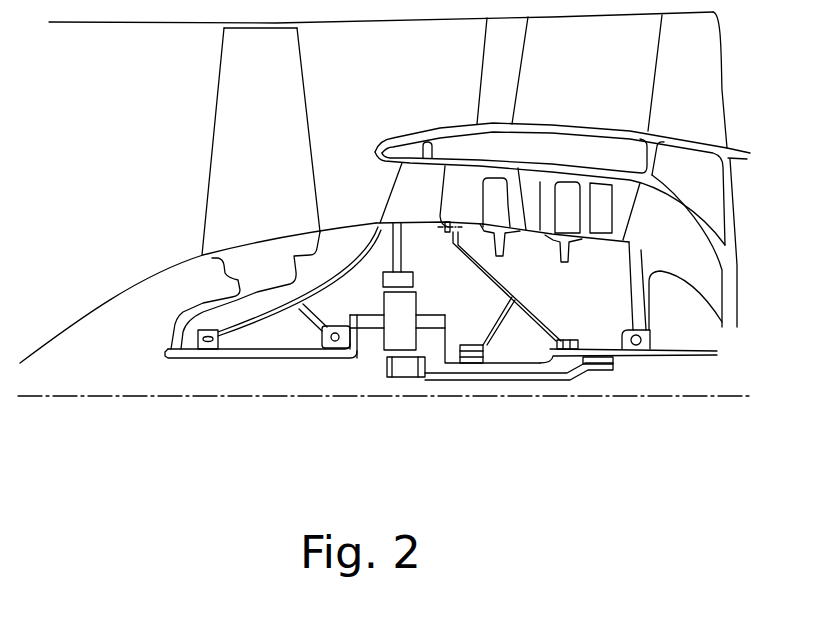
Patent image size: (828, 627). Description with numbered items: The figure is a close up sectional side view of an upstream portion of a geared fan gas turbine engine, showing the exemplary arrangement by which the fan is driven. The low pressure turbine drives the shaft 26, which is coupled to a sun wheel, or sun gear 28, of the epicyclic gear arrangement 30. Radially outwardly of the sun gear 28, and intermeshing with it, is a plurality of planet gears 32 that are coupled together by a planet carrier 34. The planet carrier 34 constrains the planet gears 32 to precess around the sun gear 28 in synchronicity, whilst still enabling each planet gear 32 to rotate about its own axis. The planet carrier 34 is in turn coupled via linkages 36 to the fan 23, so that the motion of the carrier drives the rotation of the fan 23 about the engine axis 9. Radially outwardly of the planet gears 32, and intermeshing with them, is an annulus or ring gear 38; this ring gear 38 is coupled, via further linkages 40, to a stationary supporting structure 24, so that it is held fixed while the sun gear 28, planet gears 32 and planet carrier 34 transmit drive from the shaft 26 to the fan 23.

The engine axis 9 is at (191, 400).
The fan 23 is at (226, 145).
The stationary supporting structure 24 is at (408, 190).
The shaft 26 is at (540, 380).
The sun gear 28 is at (405, 377).
The epicyclic gear arrangement 30 is at (358, 372).
The planet gears 32 is at (403, 365).
The planet carrier 34 is at (441, 347).
The linkages 36 is at (385, 337).
The ring gear 38 is at (390, 282).
The linkages 40 is at (402, 260).